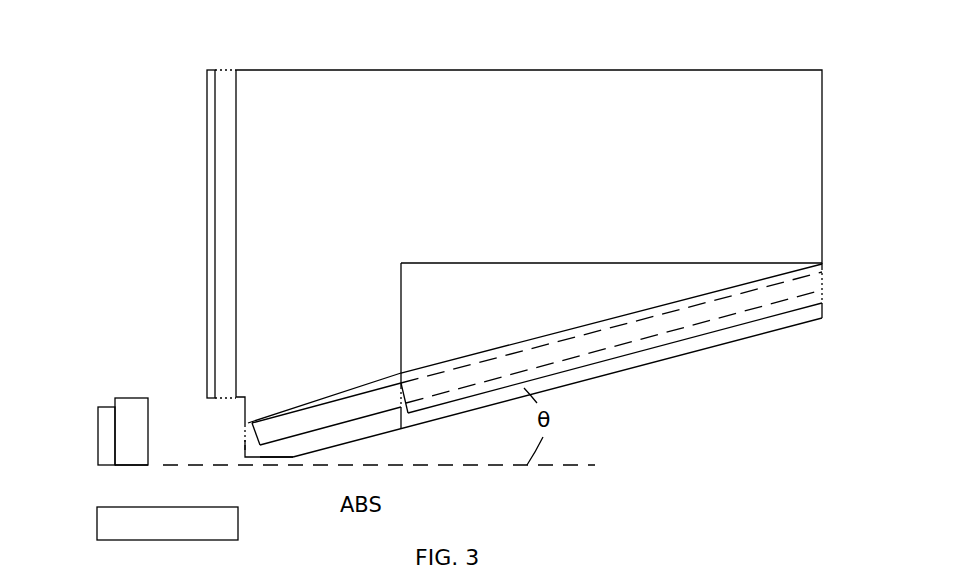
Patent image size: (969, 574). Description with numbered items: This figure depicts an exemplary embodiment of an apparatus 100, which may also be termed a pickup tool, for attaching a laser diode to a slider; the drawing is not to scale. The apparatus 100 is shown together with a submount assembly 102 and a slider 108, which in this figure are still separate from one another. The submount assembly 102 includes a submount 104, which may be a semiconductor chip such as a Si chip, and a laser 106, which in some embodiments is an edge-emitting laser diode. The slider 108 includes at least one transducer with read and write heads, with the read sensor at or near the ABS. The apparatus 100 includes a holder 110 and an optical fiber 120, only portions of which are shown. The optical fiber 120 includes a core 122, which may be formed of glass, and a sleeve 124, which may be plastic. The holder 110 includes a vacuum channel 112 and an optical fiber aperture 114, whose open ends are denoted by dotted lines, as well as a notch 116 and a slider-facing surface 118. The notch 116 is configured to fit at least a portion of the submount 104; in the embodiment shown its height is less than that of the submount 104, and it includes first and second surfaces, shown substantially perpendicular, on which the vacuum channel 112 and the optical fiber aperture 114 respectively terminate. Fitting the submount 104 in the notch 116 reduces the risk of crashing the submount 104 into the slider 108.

The apparatus 100 is at (473, 32).
The submount assembly 102 is at (114, 379).
The submount 104 is at (132, 466).
The laser 106 is at (98, 448).
The slider 108 is at (250, 543).
The holder 110 is at (823, 154).
The vacuum channel 112 is at (224, 60).
The optical fiber aperture 114 is at (233, 443).
The notch 116 is at (212, 422).
The slider-facing surface 118 is at (277, 465).
The optical fiber 120 is at (603, 383).
The core 122 is at (824, 283).
The sleeve 124 is at (702, 338).